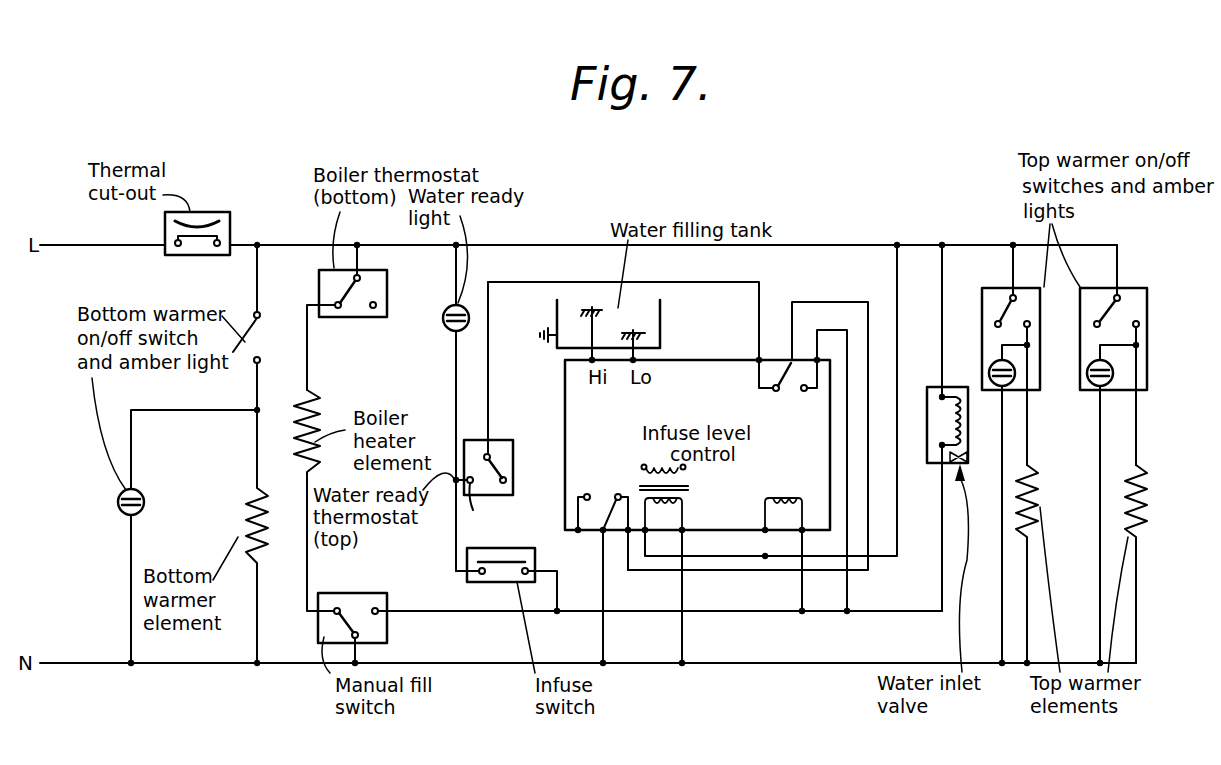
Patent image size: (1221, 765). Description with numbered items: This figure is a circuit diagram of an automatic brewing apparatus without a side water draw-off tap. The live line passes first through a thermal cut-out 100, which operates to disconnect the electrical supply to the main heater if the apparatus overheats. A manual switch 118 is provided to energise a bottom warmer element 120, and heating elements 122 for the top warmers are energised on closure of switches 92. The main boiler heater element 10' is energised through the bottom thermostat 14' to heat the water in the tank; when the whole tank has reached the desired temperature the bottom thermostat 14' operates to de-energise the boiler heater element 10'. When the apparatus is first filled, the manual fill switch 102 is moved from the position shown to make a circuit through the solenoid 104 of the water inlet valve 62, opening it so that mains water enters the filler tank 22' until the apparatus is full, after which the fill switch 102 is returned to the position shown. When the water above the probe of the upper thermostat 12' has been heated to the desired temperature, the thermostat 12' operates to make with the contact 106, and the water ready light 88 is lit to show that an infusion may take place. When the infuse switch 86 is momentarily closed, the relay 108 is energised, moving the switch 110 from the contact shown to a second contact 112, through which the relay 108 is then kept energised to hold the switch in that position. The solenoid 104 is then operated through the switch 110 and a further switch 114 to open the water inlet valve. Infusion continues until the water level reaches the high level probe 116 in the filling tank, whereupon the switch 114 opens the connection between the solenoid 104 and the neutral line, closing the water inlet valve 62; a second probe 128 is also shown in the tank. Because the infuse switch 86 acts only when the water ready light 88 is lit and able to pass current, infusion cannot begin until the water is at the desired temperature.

The thermal cut-out 100 is at (232, 230).
The manual switch 118 is at (253, 343).
The bottom warmer element 120 is at (249, 488).
The bottom thermostat 14' is at (376, 317).
The main boiler heater element 10' is at (337, 492).
The water ready light 88 is at (447, 329).
The upper thermostat 12' is at (500, 388).
The contact 106 is at (497, 508).
The manual fill switch 102 is at (368, 576).
The infuse switch 86 is at (467, 577).
The filler tank 22' is at (580, 280).
The high level probe 116 is at (593, 306).
The low level probe 128 is at (650, 331).
The further switch 114 is at (587, 494).
The switch 110 is at (772, 390).
The second contact 112 is at (805, 392).
The relay 108 is at (787, 497).
The water inlet solenoid valve 62 is at (935, 387).
The solenoid 104 is at (948, 437).
The switches 92 is at (1133, 292).
The heating elements 122 is at (1140, 478).